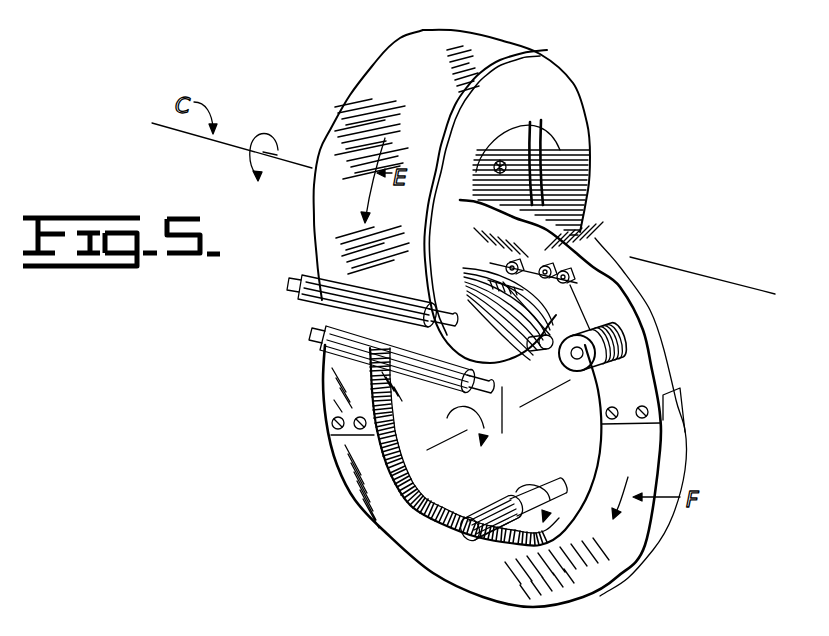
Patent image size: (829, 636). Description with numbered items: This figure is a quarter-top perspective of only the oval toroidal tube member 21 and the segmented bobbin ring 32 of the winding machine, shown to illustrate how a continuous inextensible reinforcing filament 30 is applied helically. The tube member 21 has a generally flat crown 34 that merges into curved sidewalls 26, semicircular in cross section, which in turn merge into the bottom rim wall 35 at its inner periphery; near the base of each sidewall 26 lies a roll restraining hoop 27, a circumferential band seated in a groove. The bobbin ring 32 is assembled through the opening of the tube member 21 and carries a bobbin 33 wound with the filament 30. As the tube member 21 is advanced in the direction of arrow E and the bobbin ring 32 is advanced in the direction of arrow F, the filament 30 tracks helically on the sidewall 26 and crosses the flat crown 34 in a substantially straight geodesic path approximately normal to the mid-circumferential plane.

The tube member 21 is at (485, 34).
The sidewall 26 is at (567, 88).
The roll restraining hoop 27 is at (537, 147).
The inextensible reinforcing filament 30 is at (592, 265).
The segmented bobbin ring 32 is at (685, 440).
The bobbin 33 is at (618, 330).
The crown 34 is at (433, 91).
The rim wall 35 is at (537, 97).